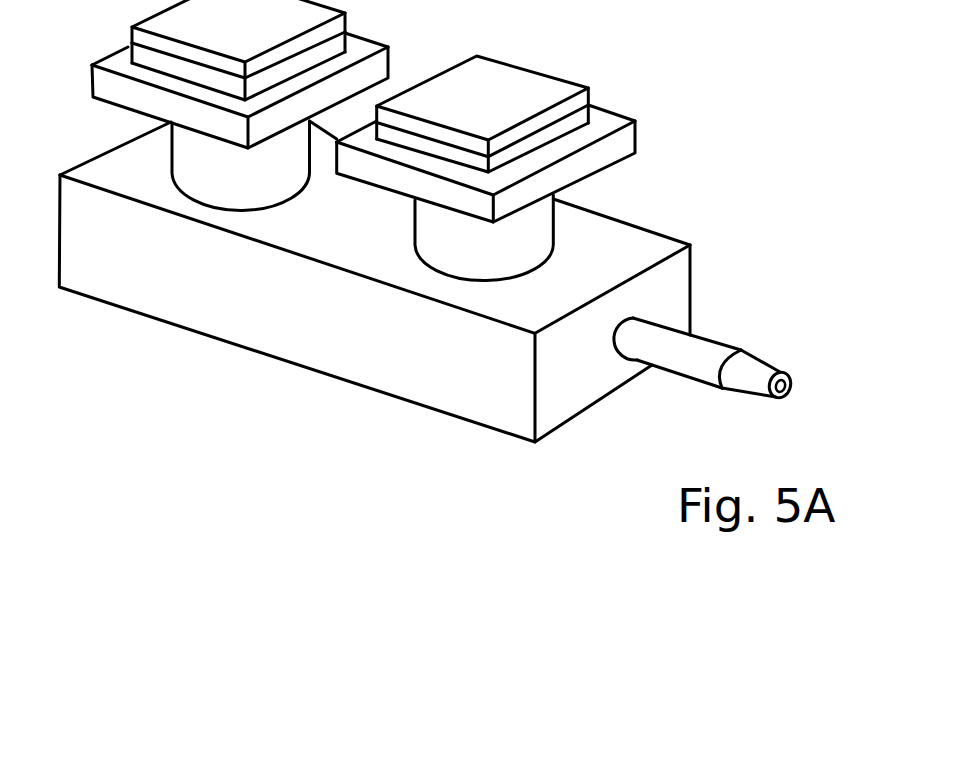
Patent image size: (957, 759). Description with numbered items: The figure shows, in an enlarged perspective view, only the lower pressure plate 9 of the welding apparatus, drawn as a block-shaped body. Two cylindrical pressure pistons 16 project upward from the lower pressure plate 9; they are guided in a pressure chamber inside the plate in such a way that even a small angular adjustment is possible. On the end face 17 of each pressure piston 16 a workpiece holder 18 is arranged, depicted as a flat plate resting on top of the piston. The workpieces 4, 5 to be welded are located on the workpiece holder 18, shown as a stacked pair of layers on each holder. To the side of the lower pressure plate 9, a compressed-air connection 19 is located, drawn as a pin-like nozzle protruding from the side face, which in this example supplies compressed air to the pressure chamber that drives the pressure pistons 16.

The workpiece 4 is at (513, 77).
The workpiece 5 is at (593, 108).
The lower pressure plate 9 is at (675, 275).
The pressure piston 16 is at (540, 222).
The end face 17 is at (610, 122).
The workpiece holder 18 is at (632, 137).
The compressed-air connection 19 is at (695, 353).